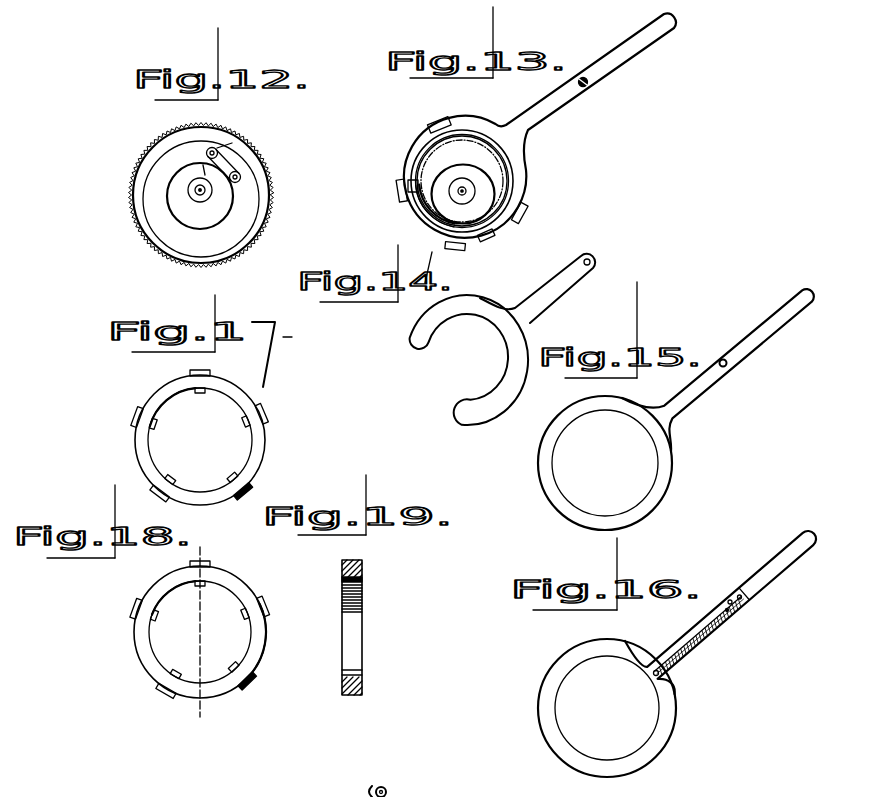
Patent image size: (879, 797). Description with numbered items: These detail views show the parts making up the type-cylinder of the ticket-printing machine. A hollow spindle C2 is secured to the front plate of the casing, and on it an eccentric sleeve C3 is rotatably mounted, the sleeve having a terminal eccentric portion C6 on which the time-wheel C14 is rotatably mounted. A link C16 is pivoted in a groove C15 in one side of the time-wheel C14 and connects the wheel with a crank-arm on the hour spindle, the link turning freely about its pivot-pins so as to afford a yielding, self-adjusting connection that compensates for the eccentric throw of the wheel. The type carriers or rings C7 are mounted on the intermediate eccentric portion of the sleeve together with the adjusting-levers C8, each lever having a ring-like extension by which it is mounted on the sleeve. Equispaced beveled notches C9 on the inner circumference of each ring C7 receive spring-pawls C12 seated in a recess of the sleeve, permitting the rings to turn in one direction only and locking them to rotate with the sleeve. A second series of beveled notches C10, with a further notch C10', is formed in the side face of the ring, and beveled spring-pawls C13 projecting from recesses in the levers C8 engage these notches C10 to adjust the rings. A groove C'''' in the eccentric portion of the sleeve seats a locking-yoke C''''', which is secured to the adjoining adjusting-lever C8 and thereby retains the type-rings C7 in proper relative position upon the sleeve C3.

In FIG. 12, the hollow spindle C2 is at (210, 195).
In FIG. 13, the hollow spindle C2 is at (468, 191).
In FIG. 12, the eccentric sleeve C3 is at (180, 205).
In FIG. 13, the eccentric sleeve C3 is at (493, 208).
In FIG. 13, the terminal eccentric portion C6 is at (480, 178).
In FIG. 13, the type carrier or ring C7 is at (473, 248).
In FIG. 17, the type carrier or ring C7 is at (233, 395).
In FIG. 18, the type carrier or ring C7 is at (157, 588).
In FIG. 19, the type carrier or ring C7 is at (348, 641).
In FIG. 13, the adjusting-lever C8 is at (598, 63).
In FIG. 15, the adjusting-lever C8 is at (675, 403).
In FIG. 16, the adjusting-lever C8 is at (670, 610).
In FIG. 13, the inner circumferential notch C9 is at (412, 197).
In FIG. 17, the inner circumferential notch C9 is at (230, 480).
In FIG. 18, the inner circumferential notch C9 is at (248, 615).
In FIG. 19, the inner circumferential notch C9 is at (362, 578).
In FIG. 18, the side-face notch C10 is at (134, 685).
In FIG. 19, the side-face notch C10 is at (334, 627).
In FIG. 18, the lug C10' is at (272, 667).
In FIG. 13, the spring-pawl C12 is at (410, 183).
In FIG. 16, the beveled spring-pawl C13 is at (698, 635).
In FIG. 12, the time-wheel C14 is at (147, 155).
In FIG. 12, the groove C15 is at (225, 243).
In FIG. 12, the link C16 is at (238, 169).
In FIG. 13, the groove C'''' is at (462, 154).
In FIG. 14, the groove C'''' is at (503, 339).
In FIG. 13, the locking-yoke C''''' is at (496, 181).